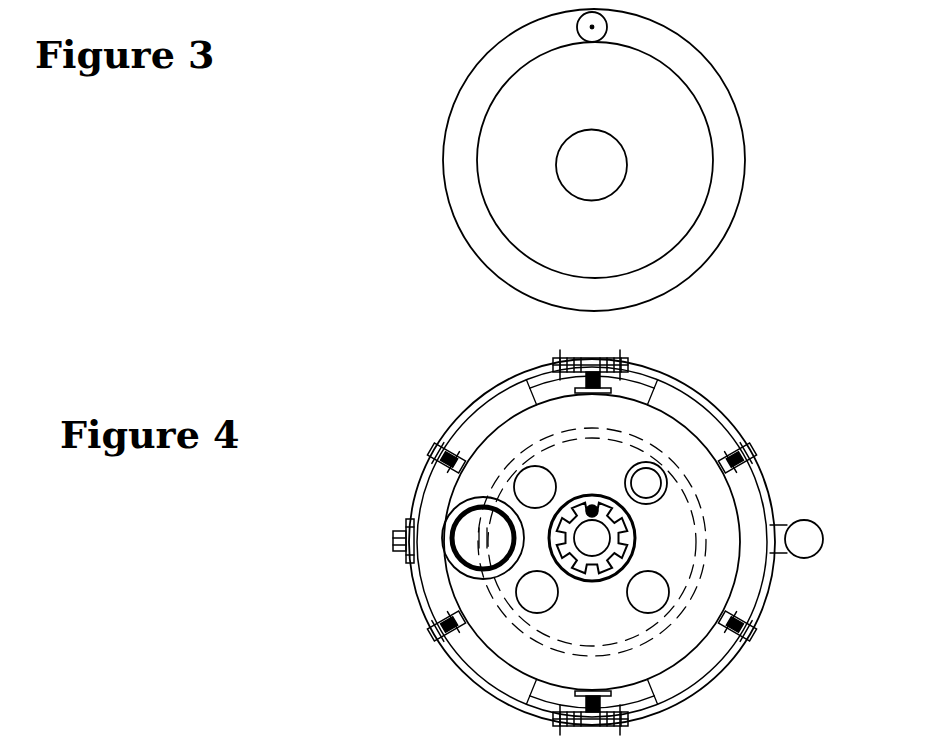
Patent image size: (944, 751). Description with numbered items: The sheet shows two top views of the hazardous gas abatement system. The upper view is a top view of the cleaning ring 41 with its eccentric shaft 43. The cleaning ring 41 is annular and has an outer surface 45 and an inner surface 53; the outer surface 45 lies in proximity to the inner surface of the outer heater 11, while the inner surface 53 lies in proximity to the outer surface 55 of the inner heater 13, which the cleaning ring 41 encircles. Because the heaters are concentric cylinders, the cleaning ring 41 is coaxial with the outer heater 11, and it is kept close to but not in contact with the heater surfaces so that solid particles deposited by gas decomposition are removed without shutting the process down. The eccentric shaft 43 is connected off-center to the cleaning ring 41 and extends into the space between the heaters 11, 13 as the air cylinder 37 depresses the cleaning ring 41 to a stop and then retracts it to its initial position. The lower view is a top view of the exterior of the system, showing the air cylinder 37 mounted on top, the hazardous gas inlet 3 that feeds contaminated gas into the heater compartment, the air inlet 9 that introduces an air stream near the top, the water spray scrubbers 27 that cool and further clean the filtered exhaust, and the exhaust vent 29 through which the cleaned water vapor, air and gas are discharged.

In FIG. 4, the hazardous gas inlet 3 is at (661, 468).
In FIG. 4, the air inlet 9 is at (810, 557).
In FIG. 4, the outer heater 11 is at (500, 450).
In FIG. 3, the inner heater 13 is at (697, 143).
In FIG. 4, the water spray scrubbers 27 is at (435, 628).
In FIG. 4, the exhaust vent 29 is at (448, 573).
In FIG. 4, the air cylinder 37 is at (537, 544).
In FIG. 3, the cleaning ring 41 is at (626, 186).
In FIG. 4, the cleaning ring 41 is at (588, 473).
In FIG. 3, the eccentric shaft 43 is at (607, 29).
In FIG. 4, the eccentric shaft 43 is at (582, 499).
In FIG. 3, the outer surface of the cleaning ring 45 is at (718, 240).
In FIG. 3, the inner surface of the cleaning ring 53 is at (656, 259).
In FIG. 3, the outer surface of the second heater 55 is at (618, 145).